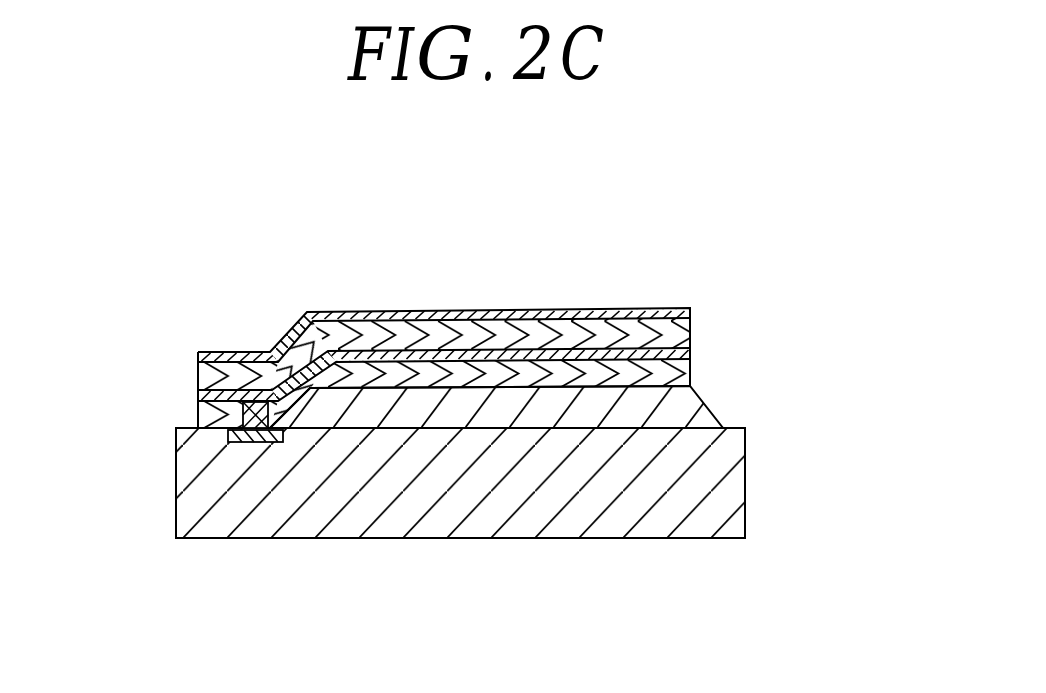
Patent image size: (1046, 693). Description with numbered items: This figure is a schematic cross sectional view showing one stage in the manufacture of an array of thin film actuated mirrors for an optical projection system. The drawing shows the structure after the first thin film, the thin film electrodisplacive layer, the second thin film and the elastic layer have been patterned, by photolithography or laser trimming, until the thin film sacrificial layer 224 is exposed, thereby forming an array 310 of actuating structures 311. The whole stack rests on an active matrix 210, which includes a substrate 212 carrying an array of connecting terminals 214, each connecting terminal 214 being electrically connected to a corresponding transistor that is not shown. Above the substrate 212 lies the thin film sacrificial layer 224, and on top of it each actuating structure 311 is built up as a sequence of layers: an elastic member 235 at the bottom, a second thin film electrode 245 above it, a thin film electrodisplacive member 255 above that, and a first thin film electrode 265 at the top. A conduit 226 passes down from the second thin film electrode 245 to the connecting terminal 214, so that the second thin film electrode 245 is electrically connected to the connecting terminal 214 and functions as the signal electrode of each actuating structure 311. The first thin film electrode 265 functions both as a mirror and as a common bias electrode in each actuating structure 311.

The array of M×N actuating structures 310 is at (798, 108).
The actuating structure 311 is at (807, 305).
The active matrix 210 is at (757, 423).
The substrate 212 is at (430, 528).
The connecting terminal 214 is at (246, 441).
The thin film sacrificial layer 224 is at (692, 410).
The conduit 226 is at (262, 416).
The elastic member 235 is at (595, 366).
The second thin film electrode 245 is at (427, 355).
The thin film electrodisplacive member 255 is at (513, 333).
The first thin film electrode 265 is at (338, 312).